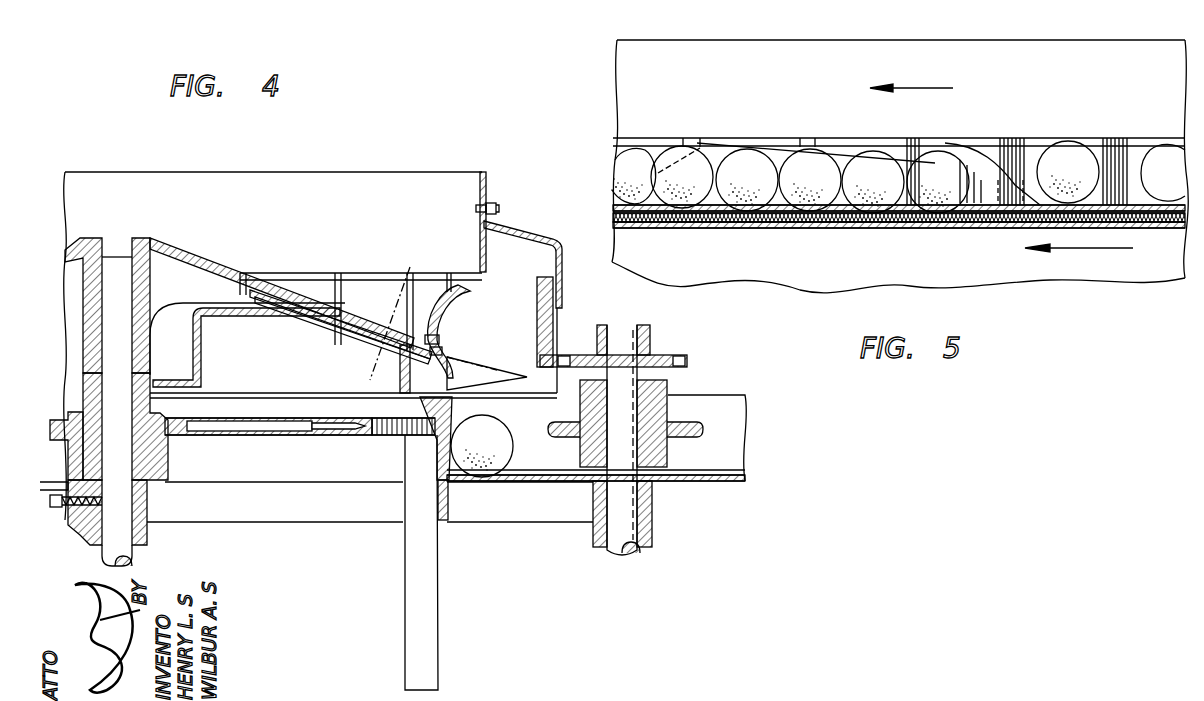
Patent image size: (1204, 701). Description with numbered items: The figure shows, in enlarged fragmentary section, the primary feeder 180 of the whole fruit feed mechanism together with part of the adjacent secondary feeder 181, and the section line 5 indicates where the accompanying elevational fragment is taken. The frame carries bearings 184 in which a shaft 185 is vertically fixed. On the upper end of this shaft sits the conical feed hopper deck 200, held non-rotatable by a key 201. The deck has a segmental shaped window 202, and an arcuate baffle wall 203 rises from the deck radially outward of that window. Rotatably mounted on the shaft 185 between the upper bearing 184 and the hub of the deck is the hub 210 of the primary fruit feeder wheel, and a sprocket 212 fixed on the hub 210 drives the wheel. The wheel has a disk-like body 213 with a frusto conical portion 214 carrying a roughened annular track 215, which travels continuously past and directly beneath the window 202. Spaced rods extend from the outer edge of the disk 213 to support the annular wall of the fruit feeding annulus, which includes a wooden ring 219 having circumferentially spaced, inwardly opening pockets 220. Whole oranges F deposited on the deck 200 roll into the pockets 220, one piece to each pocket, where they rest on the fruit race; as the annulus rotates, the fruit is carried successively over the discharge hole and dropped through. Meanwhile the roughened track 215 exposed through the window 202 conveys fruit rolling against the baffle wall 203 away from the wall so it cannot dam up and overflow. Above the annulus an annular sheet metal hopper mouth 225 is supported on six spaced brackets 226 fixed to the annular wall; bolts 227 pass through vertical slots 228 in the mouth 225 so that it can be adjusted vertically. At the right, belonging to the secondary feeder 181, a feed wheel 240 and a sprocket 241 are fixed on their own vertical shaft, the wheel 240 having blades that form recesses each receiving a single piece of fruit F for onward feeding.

In FIG. 4, the primary feeder 180 is at (362, 166).
In FIG. 4, the secondary feeder 181 is at (690, 509).
In FIG. 4, the bearings 184 is at (148, 533).
In FIG. 4, the shaft 185 is at (120, 512).
In FIG. 4, the conical feed hopper deck 200 is at (197, 257).
In FIG. 4, the key 201 is at (126, 252).
In FIG. 4, the segmental shaped window 202 is at (350, 274).
In FIG. 5, the segmental shaped window 202 is at (947, 212).
In FIG. 4, the arcuate baffle wall 203 is at (440, 292).
In FIG. 5, the arcuate baffle wall 203 is at (728, 150).
In FIG. 4, the hub 210 is at (153, 405).
In FIG. 4, the sprocket 212 is at (337, 436).
In FIG. 4, the disk-like body 213 is at (308, 326).
In FIG. 5, the disk-like body 213 is at (660, 229).
In FIG. 4, the frusto conical portion 214 is at (380, 312).
In FIG. 5, the frusto conical portion 214 is at (822, 220).
In FIG. 5, the roughened annular track 215 is at (717, 208).
In FIG. 4, the wooden ring 219 is at (560, 298).
In FIG. 4, the pockets 220 is at (507, 293).
In FIG. 5, the pockets 220 is at (941, 147).
In FIG. 4, the annular sheet metal hopper mouth 225 is at (465, 182).
In FIG. 5, the annular sheet metal hopper mouth 225 is at (810, 50).
In FIG. 4, the brackets 226 is at (535, 237).
In FIG. 4, the bolts 227 is at (478, 207).
In FIG. 4, the vertical slots 228 is at (478, 195).
In FIG. 4, the feed wheel 240 is at (668, 392).
In FIG. 4, the sprocket 241 is at (650, 333).
In FIG. 4, the section line 5- 5 is at (408, 266).
In FIG. 4, the whole oranges F is at (502, 432).
In FIG. 5, the whole oranges F is at (627, 155).